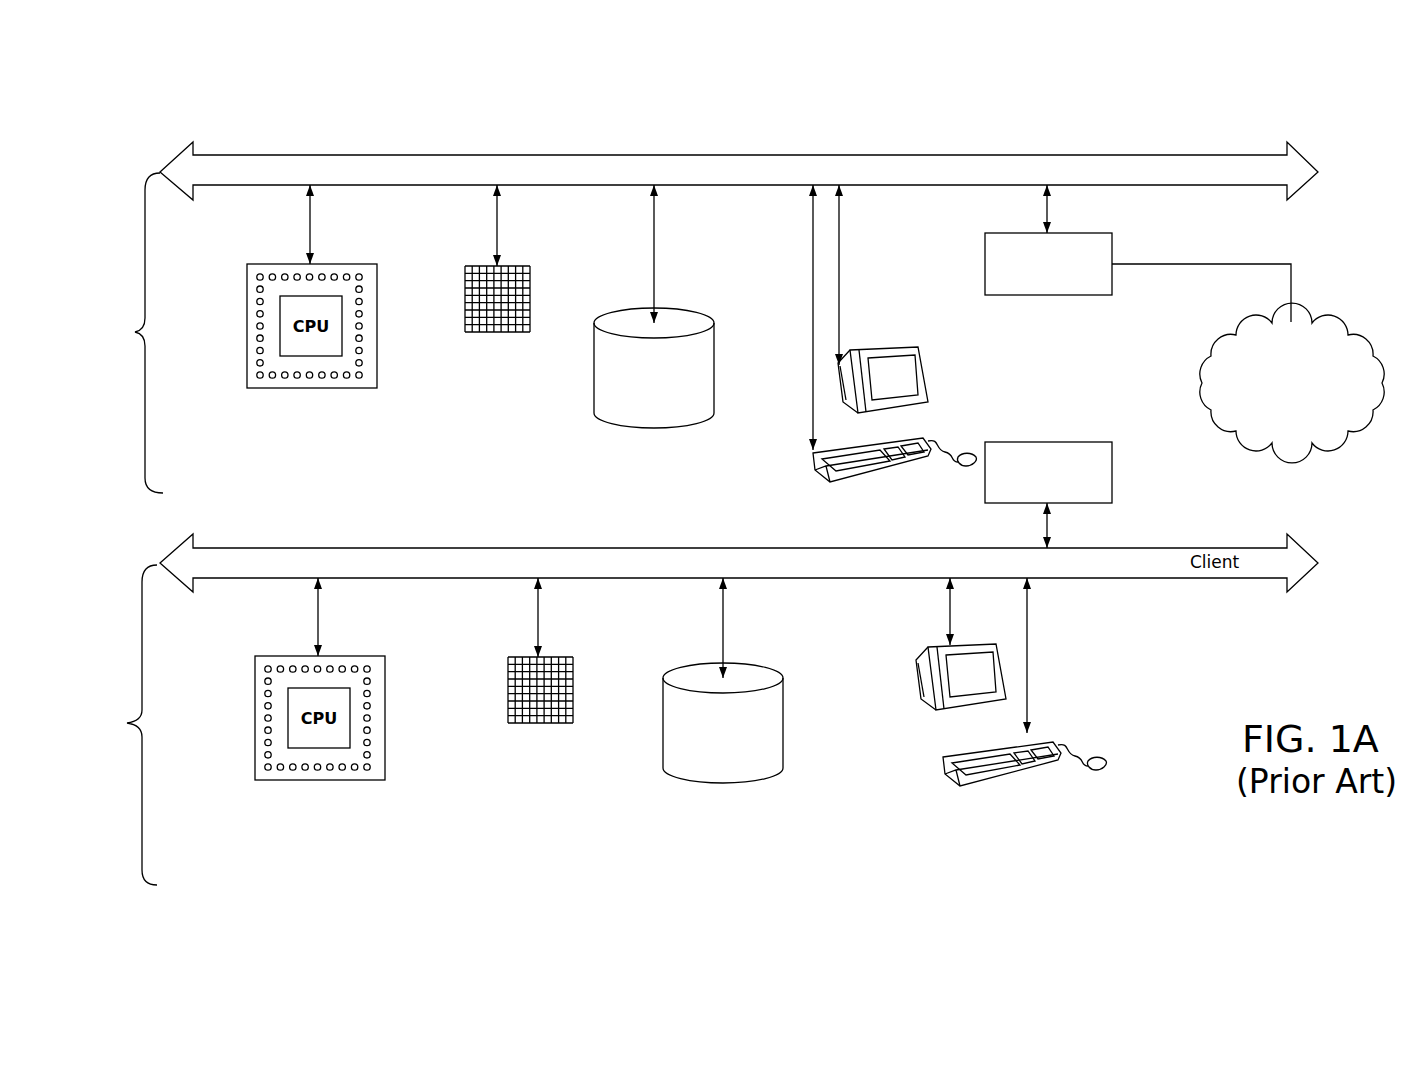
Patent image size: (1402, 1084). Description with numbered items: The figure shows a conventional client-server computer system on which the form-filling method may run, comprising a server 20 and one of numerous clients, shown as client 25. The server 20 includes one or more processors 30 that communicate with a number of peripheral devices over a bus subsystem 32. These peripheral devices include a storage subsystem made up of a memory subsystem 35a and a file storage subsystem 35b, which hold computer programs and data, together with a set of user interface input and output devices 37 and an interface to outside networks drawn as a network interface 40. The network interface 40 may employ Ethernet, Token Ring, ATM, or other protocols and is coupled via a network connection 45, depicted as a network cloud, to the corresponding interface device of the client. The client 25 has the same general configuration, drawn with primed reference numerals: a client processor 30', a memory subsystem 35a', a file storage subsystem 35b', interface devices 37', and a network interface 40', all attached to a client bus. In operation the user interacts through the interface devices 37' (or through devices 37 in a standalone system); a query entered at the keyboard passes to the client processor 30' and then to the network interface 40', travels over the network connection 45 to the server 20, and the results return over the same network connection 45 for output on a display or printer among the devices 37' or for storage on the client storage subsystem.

The server 20 is at (140, 327).
The client 25 is at (138, 718).
The processor 30 is at (337, 286).
The client processor 30' is at (342, 679).
The bus subsystem 32 is at (1145, 155).
The memory subsystem 35a is at (526, 258).
The memory subsystem 35a' is at (568, 650).
The file storage subsystem 35b is at (680, 306).
The file storage subsystem 35b' is at (753, 680).
The user interface input and output devices 37 is at (892, 333).
The interface devices 37' is at (1011, 682).
The network interface 40 is at (1138, 253).
The network interface 40' is at (1069, 492).
The network connection 45 is at (1336, 327).